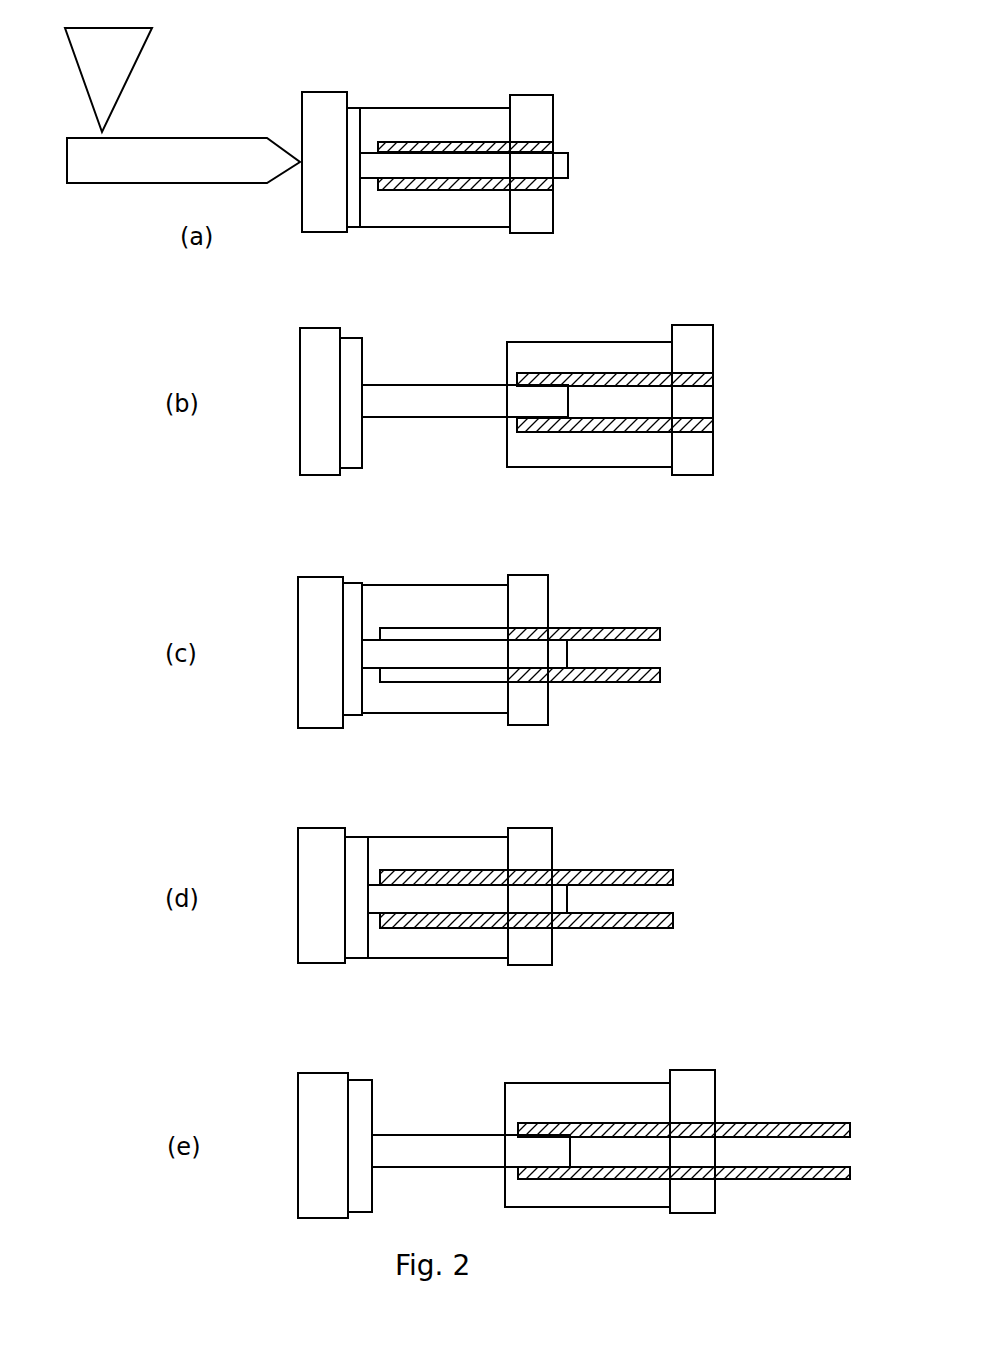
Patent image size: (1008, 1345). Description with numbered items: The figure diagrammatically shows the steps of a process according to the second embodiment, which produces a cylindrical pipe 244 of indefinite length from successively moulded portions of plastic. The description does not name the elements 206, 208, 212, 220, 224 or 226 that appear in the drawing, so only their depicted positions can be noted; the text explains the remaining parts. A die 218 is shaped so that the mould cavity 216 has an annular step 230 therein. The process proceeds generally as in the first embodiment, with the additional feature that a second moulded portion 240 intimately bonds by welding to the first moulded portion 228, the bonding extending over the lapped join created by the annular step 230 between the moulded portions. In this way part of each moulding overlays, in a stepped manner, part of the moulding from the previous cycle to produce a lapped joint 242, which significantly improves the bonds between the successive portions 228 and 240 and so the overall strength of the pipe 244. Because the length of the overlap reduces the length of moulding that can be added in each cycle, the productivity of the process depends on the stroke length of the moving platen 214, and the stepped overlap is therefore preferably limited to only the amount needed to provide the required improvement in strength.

The heat source 206 is at (127, 82).
The tapered feed rod 208 is at (147, 185).
The first end block 212 is at (325, 90).
The moving platen 214 is at (535, 92).
The mould cavity 216 is at (442, 140).
The die 218 is at (418, 227).
The central rod 220 is at (558, 182).
The hatched sleeve 224 is at (537, 142).
The inner plate 226 is at (455, 683).
The first moulded portion 228 is at (592, 373).
The annular step 230 is at (527, 372).
The second moulded portion 240 is at (440, 870).
The lapped joint 242 is at (530, 928).
The cylindrical pipe 244 is at (748, 1180).